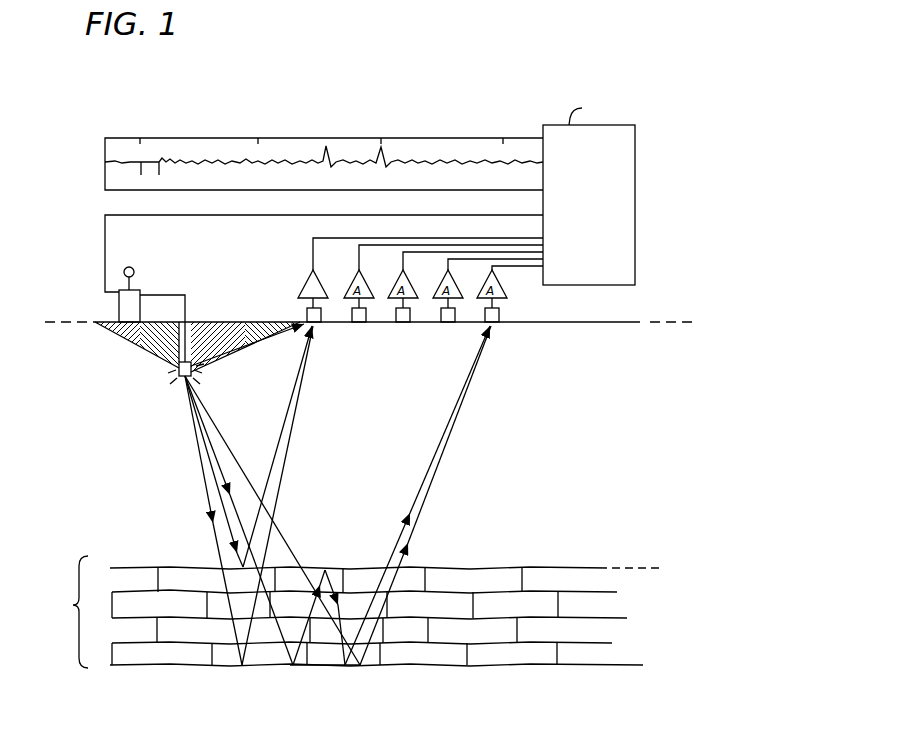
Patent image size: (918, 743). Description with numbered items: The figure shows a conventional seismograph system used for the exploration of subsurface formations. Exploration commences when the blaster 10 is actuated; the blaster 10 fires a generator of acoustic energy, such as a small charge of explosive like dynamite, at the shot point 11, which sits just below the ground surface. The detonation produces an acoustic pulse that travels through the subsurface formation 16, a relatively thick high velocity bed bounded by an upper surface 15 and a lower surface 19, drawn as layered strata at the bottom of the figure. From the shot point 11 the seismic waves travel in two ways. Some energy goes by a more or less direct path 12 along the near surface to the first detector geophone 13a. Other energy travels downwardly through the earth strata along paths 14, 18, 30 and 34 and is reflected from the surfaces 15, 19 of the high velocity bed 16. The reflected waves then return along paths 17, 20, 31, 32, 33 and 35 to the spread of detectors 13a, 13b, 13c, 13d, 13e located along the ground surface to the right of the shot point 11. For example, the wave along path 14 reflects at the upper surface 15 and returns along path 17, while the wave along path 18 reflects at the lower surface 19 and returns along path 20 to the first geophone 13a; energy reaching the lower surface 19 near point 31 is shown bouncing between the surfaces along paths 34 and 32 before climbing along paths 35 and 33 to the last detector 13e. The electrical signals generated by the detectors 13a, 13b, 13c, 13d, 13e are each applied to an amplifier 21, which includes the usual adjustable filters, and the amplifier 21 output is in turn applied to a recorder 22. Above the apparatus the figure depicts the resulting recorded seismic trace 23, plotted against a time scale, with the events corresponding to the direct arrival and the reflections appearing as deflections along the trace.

The blaster 10 is at (118, 305).
The shot point 11 is at (179, 376).
The direct path 12 is at (240, 350).
The first detector geophone 13a is at (306, 312).
The detector geophone 13b is at (358, 325).
The detector geophone 13c is at (397, 326).
The detector geophone 13d is at (450, 323).
The detector geophone 13e is at (496, 319).
The downward travel path 14 is at (219, 493).
The upper reflecting surface 15 is at (148, 568).
The high velocity bed 16 is at (330, 612).
The reflected wave path 17 is at (271, 472).
The downward travel path 18 is at (212, 516).
The lower reflecting surface 19 is at (200, 656).
The reflected wave path 20 is at (278, 500).
The amplifier 21 is at (303, 290).
The recorder 22 is at (636, 185).
The seismic trace record 23 is at (328, 103).
The downward travel path 30 is at (212, 443).
The reflected wave path 31 is at (308, 664).
The reflected wave path 32 is at (340, 585).
The reflected wave path 33 is at (440, 456).
The downward travel path 34 is at (294, 564).
The reflected wave path 35 is at (417, 493).